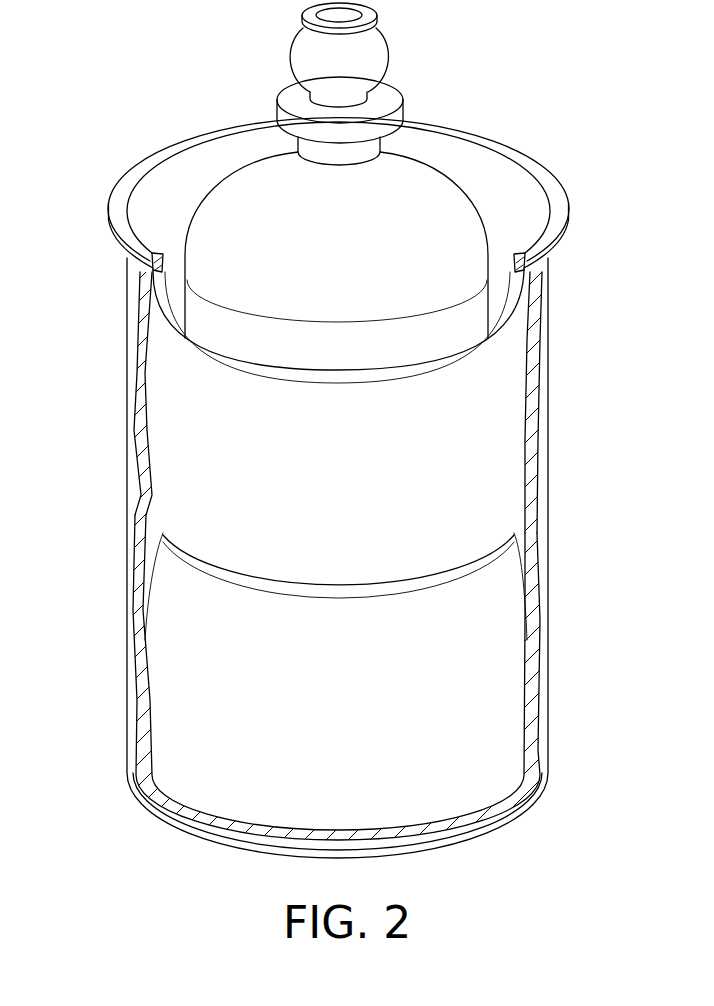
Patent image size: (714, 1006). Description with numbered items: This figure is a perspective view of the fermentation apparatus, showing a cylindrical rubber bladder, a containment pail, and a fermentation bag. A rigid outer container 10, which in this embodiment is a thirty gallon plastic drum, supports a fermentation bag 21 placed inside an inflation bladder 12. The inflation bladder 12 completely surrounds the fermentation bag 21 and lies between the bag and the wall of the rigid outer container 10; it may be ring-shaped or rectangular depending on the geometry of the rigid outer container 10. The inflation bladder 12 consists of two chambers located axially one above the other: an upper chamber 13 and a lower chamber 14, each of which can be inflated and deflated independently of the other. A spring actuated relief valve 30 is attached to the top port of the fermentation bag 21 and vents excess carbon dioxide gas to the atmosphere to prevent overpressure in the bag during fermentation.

The rigid outer container 10 is at (553, 290).
The inflation bladder 12 is at (558, 313).
The upper chamber 13 is at (227, 417).
The lower chamber 14 is at (232, 677).
The fermentation bag 21 is at (397, 192).
The spring actuated relief valve 30 is at (295, 57).